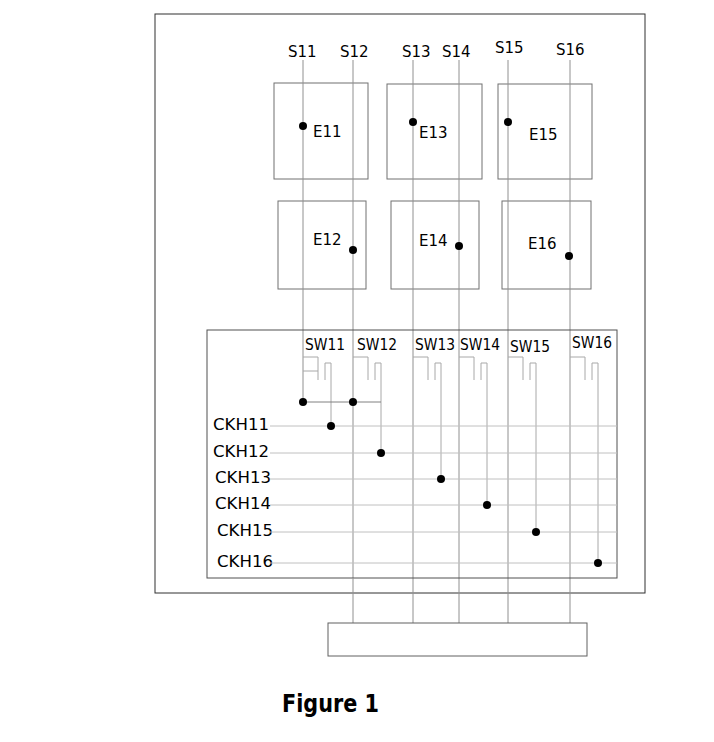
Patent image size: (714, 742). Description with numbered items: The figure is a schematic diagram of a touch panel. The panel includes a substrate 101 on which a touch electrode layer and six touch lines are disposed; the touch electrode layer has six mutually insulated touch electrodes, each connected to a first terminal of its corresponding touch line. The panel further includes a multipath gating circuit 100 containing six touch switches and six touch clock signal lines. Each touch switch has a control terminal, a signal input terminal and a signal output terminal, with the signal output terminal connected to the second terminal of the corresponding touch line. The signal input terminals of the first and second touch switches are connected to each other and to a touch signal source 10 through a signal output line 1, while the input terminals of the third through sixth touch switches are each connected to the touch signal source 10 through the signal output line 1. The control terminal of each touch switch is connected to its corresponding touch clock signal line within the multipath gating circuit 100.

The substrate 101 is at (155, 83).
The multipath gating circuit 100 is at (207, 383).
The signal output line 1 is at (353, 541).
The touch signal source 10 is at (457, 639).